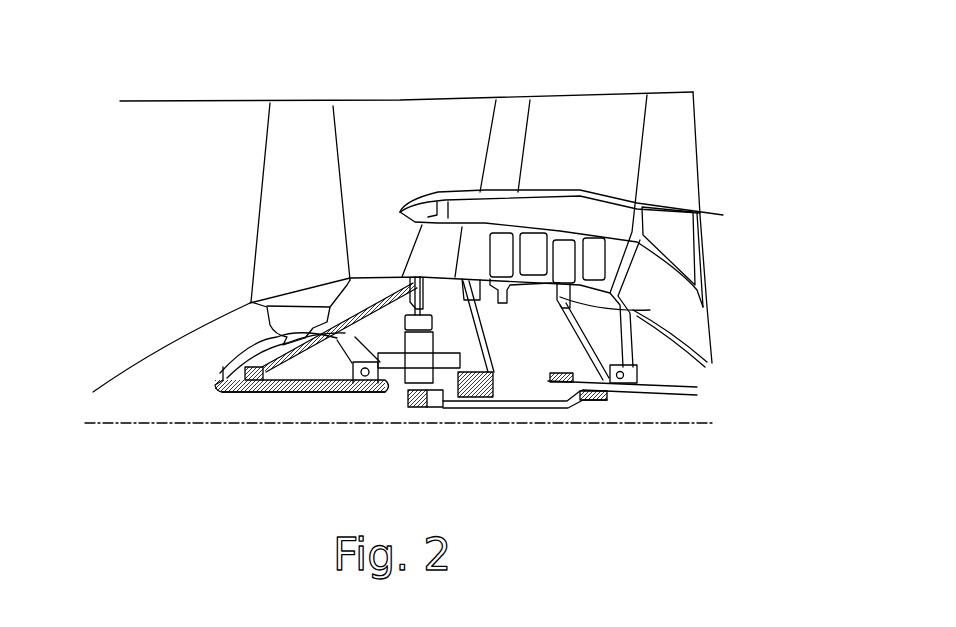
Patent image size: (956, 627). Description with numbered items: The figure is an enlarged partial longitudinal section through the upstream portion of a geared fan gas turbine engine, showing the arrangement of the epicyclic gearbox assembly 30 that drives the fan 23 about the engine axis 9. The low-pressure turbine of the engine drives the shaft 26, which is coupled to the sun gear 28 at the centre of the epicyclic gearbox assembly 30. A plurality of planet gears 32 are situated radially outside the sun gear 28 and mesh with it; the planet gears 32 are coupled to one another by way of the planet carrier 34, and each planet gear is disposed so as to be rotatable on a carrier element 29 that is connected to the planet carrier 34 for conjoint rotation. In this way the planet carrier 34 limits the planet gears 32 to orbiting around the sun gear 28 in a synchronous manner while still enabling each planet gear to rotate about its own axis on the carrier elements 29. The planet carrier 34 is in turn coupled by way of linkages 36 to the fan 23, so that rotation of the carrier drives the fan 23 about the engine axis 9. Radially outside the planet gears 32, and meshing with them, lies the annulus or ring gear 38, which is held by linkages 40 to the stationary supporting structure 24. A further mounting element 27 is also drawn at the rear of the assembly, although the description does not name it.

The engine axis 9 is at (242, 425).
The fan 23 is at (258, 205).
The stationary supporting structure 24 is at (418, 244).
The shaft 26 is at (535, 410).
The rear attachment 27 is at (613, 393).
The sun gear 28 is at (427, 400).
The carrier elements 29 is at (484, 405).
The epicyclic gearbox assembly 30 is at (397, 386).
The planet gears 32 is at (407, 398).
The planet carrier 34 is at (455, 384).
The linkages 36 is at (380, 402).
The ring gear 38 is at (402, 326).
The linkages 40 is at (437, 323).